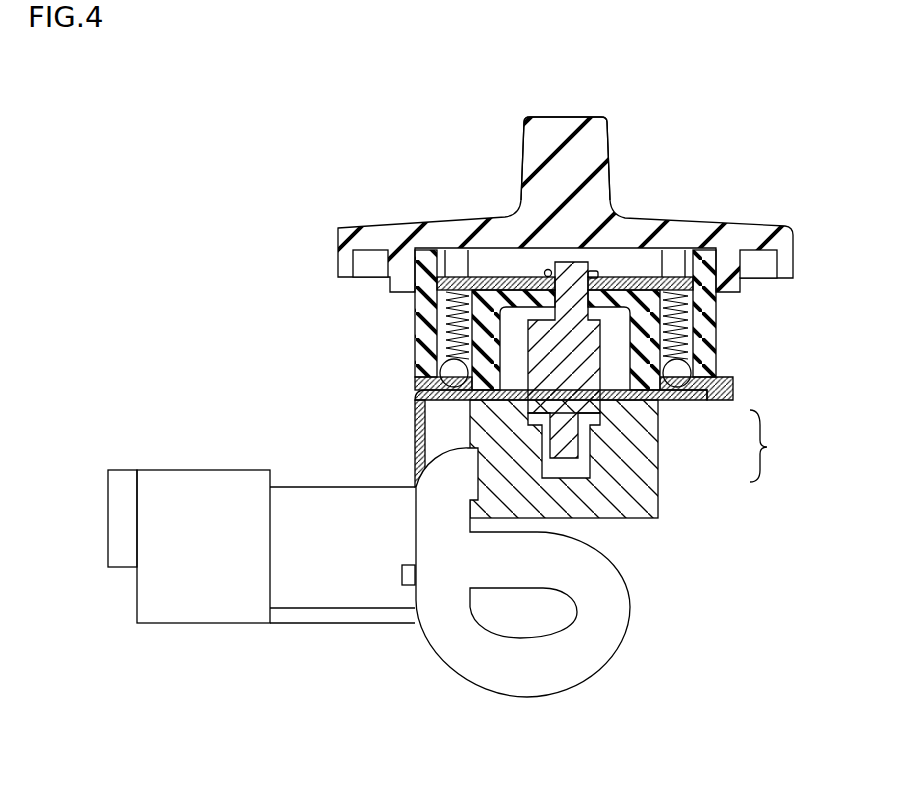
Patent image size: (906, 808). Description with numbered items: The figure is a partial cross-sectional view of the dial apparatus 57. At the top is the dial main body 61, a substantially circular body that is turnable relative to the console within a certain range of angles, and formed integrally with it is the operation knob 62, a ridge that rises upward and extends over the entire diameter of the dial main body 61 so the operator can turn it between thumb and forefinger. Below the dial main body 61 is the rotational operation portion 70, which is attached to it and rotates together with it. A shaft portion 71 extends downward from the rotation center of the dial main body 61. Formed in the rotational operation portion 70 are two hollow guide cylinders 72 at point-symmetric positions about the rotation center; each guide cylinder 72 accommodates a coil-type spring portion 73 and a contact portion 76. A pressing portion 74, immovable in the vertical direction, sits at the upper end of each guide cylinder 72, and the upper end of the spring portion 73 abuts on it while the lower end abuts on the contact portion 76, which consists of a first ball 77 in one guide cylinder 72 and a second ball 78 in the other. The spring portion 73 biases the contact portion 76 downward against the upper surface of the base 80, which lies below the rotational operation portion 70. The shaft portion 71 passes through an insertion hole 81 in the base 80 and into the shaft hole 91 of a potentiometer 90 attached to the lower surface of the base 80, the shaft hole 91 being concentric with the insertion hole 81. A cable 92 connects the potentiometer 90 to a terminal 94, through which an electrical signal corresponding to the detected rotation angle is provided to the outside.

The dial apparatus 57 is at (381, 121).
The dial main body 61 is at (417, 220).
The operation knob 62 is at (568, 128).
The rotational operation portion 70 is at (655, 320).
The shaft portion 71 is at (646, 312).
The guide cylinder 72 is at (455, 306).
The spring portion 73 is at (445, 365).
The pressing portion 74 is at (495, 281).
The contact portion 76 is at (772, 446).
The first ball 77 is at (605, 412).
The second ball 78 is at (680, 388).
The base 80 is at (515, 388).
The insertion hole 81 is at (528, 408).
The potentiometer 90 is at (640, 500).
The shaft hole 91 is at (603, 530).
The cable 92 is at (524, 684).
The terminal 94 is at (206, 614).